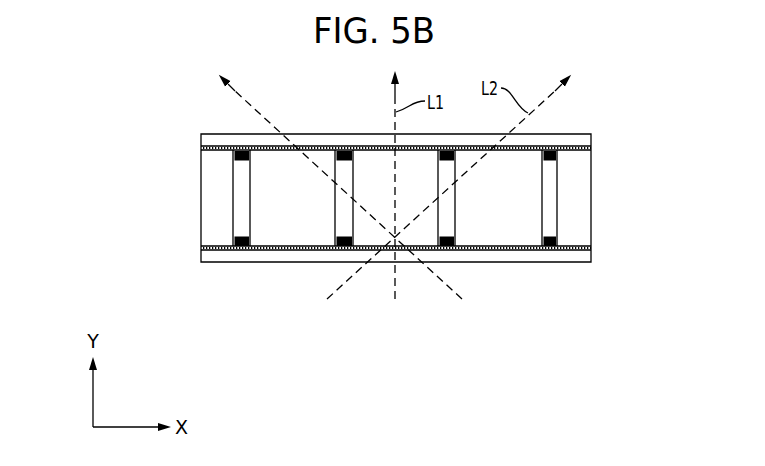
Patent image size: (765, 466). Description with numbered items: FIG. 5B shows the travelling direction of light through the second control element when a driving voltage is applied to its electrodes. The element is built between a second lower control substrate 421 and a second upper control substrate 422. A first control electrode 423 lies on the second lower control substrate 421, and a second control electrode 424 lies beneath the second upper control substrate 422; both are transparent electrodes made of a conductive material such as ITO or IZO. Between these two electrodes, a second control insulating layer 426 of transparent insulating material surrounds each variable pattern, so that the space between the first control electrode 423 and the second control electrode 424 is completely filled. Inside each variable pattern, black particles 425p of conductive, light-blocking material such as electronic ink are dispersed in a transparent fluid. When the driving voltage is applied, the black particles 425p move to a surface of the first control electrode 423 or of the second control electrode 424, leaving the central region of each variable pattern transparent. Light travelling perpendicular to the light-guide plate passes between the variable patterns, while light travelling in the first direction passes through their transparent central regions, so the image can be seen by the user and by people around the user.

The second lower control substrate 421 is at (573, 258).
The second upper control substrate 422 is at (573, 138).
The first control electrode 423 is at (207, 249).
The second control electrode 424 is at (207, 148).
The black particles 425p is at (559, 236).
The second control insulating layer 426 is at (573, 185).